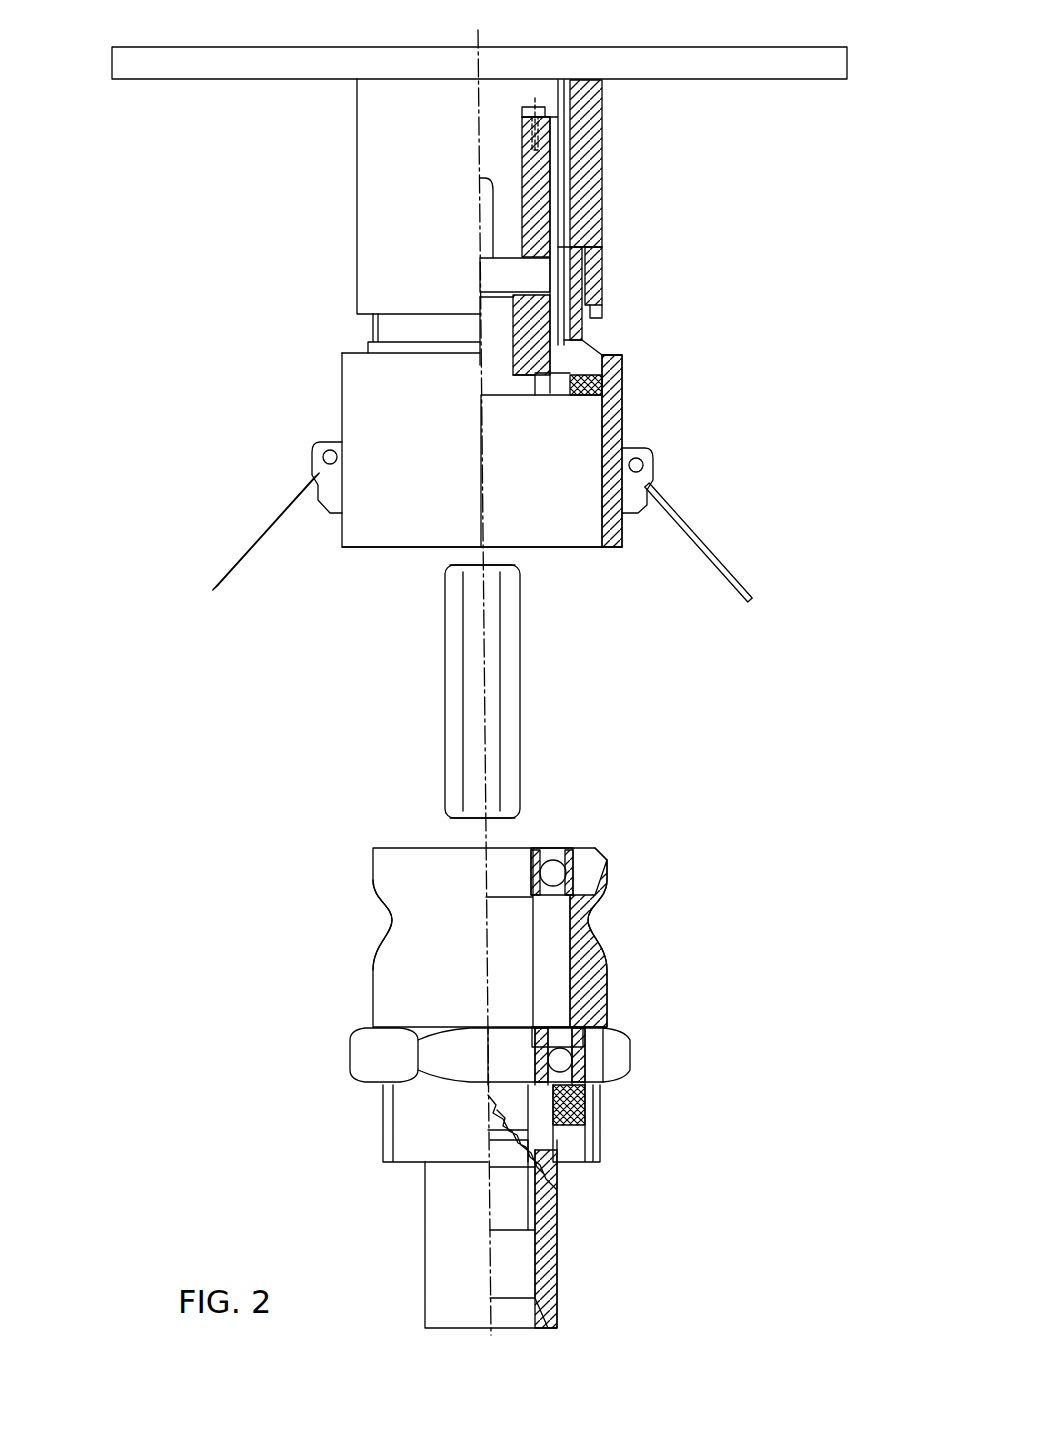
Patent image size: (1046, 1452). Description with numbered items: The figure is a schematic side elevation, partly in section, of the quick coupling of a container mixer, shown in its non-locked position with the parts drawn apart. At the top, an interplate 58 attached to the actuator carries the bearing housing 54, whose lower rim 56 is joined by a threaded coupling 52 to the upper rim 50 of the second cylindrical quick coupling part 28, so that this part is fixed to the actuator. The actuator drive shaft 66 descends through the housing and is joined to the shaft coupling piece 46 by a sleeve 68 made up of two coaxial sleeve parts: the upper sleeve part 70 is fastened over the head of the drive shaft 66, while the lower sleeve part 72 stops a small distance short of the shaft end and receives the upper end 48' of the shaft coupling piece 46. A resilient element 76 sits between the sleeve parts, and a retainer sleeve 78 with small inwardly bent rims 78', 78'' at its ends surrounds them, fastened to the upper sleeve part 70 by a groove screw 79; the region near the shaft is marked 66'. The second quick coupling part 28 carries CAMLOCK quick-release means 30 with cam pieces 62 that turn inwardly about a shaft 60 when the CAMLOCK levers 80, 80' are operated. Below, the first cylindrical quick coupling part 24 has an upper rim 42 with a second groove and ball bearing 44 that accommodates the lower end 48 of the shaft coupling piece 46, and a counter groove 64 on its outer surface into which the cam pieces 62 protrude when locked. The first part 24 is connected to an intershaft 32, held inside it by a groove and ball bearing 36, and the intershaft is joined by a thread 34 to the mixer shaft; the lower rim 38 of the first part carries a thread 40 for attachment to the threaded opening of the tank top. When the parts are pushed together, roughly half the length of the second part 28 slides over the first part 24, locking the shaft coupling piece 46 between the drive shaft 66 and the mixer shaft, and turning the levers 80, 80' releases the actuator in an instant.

The first quick coupling part 24 is at (583, 975).
The second quick coupling part 28 is at (608, 432).
The CAMLOCK quick-release means 30 is at (718, 476).
The intershaft 32 is at (545, 1265).
The thread 34 is at (530, 1203).
The groove and ball bearing 36 is at (562, 1060).
The lower rim 38 is at (667, 1106).
The thread 40 is at (600, 1140).
The upper rim 42 is at (628, 853).
The second groove and ball bearing 44 is at (553, 873).
The shaft coupling piece 46 is at (510, 703).
The end of the shaft coupling piece 48 is at (399, 797).
The other end of the shaft coupling piece 48' is at (415, 626).
The upper rim 50 is at (606, 245).
The threaded coupling 52 is at (603, 285).
The bearing housing 54 is at (582, 200).
The lower rim 56 is at (615, 313).
The interplate 58 is at (238, 57).
The shaft 60 is at (318, 445).
The cam piece 62 is at (318, 465).
The counter groove 64 is at (380, 919).
The drive shaft 66 is at (451, 158).
The pipe flange 66' is at (388, 292).
The sleeve 68 is at (570, 168).
The upper sleeve part 70 is at (522, 178).
The lower sleeve part 72 is at (518, 350).
The resilient element 76 is at (527, 278).
The retainer sleeve 78 is at (621, 222).
The inwardly bent rim 78' is at (558, 435).
The inwardly bent rim 78'' is at (617, 176).
The groove screw 79 is at (533, 98).
The CAMLOCK lever 80 is at (266, 573).
The CAMLOCK lever 80' is at (754, 542).